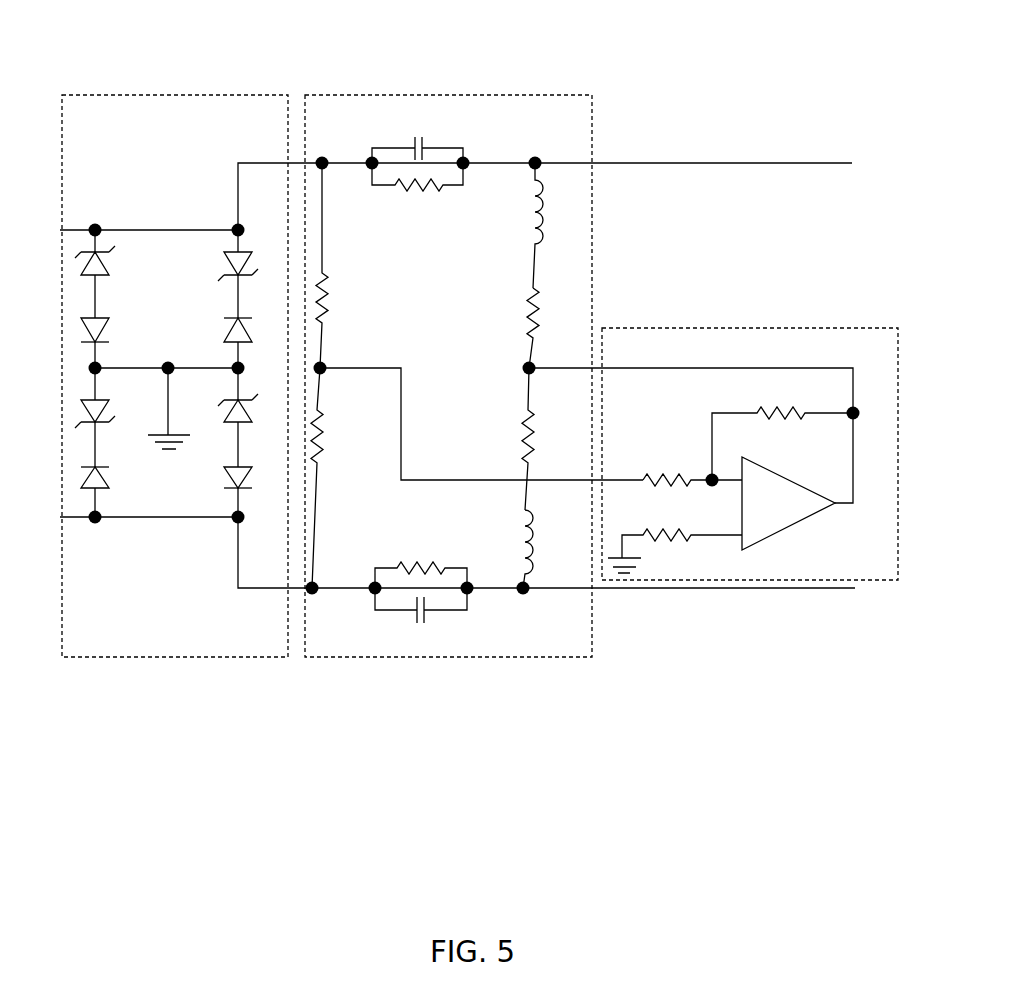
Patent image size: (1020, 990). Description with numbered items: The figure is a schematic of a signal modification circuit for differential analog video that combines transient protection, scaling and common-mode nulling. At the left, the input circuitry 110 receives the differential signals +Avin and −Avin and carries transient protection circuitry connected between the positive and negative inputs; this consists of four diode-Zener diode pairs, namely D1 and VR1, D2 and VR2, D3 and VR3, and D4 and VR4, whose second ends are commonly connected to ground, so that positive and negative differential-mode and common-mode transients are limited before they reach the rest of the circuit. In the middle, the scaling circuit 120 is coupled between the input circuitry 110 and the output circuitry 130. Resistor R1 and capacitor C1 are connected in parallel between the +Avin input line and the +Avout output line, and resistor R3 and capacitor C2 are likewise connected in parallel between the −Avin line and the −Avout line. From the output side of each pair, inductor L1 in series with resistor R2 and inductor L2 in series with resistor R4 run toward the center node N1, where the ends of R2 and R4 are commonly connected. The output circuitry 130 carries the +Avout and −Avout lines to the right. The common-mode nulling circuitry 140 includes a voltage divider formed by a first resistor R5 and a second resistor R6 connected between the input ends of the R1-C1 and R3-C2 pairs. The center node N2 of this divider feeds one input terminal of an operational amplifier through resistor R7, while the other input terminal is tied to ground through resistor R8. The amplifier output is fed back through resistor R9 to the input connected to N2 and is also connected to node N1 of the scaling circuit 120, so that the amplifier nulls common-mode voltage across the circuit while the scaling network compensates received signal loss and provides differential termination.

The input circuitry 110 is at (184, 343).
The scaling circuit 120 is at (579, 343).
The output circuitry 130 is at (670, 163).
The common-mode nulling circuitry 140 is at (750, 484).
The center node N1 is at (527, 364).
The center node of the voltage divider N2 is at (323, 366).
The Zener diode VR1 is at (114, 260).
The Zener diode VR2 is at (114, 413).
The Zener diode VR3 is at (257, 266).
The Zener diode VR4 is at (257, 408).
The diode D1 is at (111, 329).
The diode D2 is at (111, 477).
The diode D3 is at (254, 329).
The diode D4 is at (254, 477).
The resistor R1 is at (417, 190).
The resistor R2 is at (549, 328).
The resistor R3 is at (421, 564).
The resistor R4 is at (544, 439).
The first resistor R5 is at (337, 265).
The second resistor R6 is at (332, 478).
The resistor R7 is at (692, 496).
The resistor R8 is at (675, 551).
The resistor R9 is at (786, 455).
The capacitor C1 is at (417, 137).
The capacitor C2 is at (421, 616).
The inductor L1 is at (553, 225).
The inductor L2 is at (544, 549).